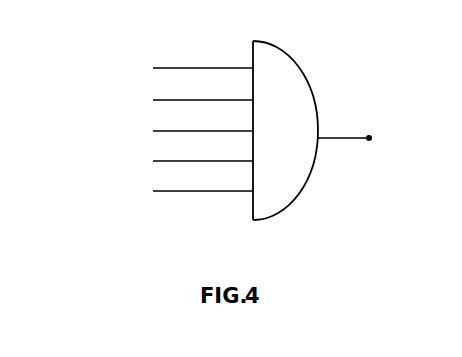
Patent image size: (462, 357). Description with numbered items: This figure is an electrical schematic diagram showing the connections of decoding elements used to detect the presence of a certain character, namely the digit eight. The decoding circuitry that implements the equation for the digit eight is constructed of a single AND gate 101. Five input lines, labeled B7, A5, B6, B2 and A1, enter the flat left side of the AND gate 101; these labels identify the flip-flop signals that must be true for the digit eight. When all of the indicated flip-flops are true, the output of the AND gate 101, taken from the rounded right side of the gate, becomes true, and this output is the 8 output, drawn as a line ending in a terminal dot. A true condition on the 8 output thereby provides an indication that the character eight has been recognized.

The AND gate 101 is at (299, 73).
The 8 output 8 is at (356, 137).
The input signal B7 is at (174, 65).
The input signal A5 is at (174, 97).
The input signal B6 is at (174, 125).
The input signal B2 is at (174, 155).
The input signal A1 is at (174, 185).